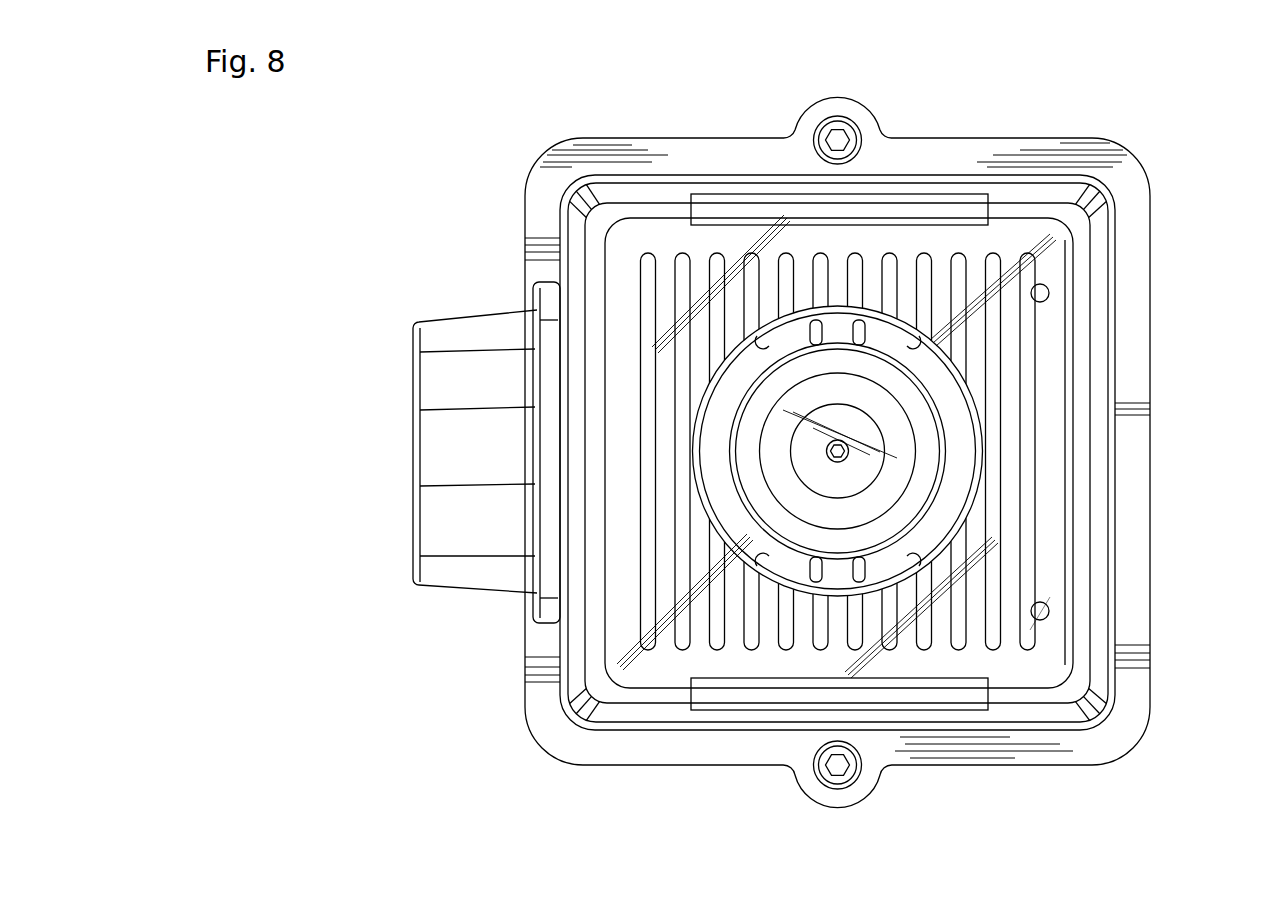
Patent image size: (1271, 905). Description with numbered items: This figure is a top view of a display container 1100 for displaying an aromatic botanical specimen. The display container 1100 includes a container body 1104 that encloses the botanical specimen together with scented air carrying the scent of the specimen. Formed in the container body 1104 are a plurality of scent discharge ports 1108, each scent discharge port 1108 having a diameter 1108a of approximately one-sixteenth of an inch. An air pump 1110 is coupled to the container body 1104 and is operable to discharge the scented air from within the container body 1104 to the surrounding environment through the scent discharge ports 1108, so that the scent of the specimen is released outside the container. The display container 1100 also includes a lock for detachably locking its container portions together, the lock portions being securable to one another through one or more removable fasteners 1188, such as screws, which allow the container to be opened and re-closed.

The display container 1100 is at (482, 93).
The container body 1104 is at (527, 167).
The scent discharge port 1108 is at (1052, 294).
The diameter 1108a is at (1067, 572).
The air pump 1110 is at (443, 303).
The removable fastener 1188 is at (864, 777).